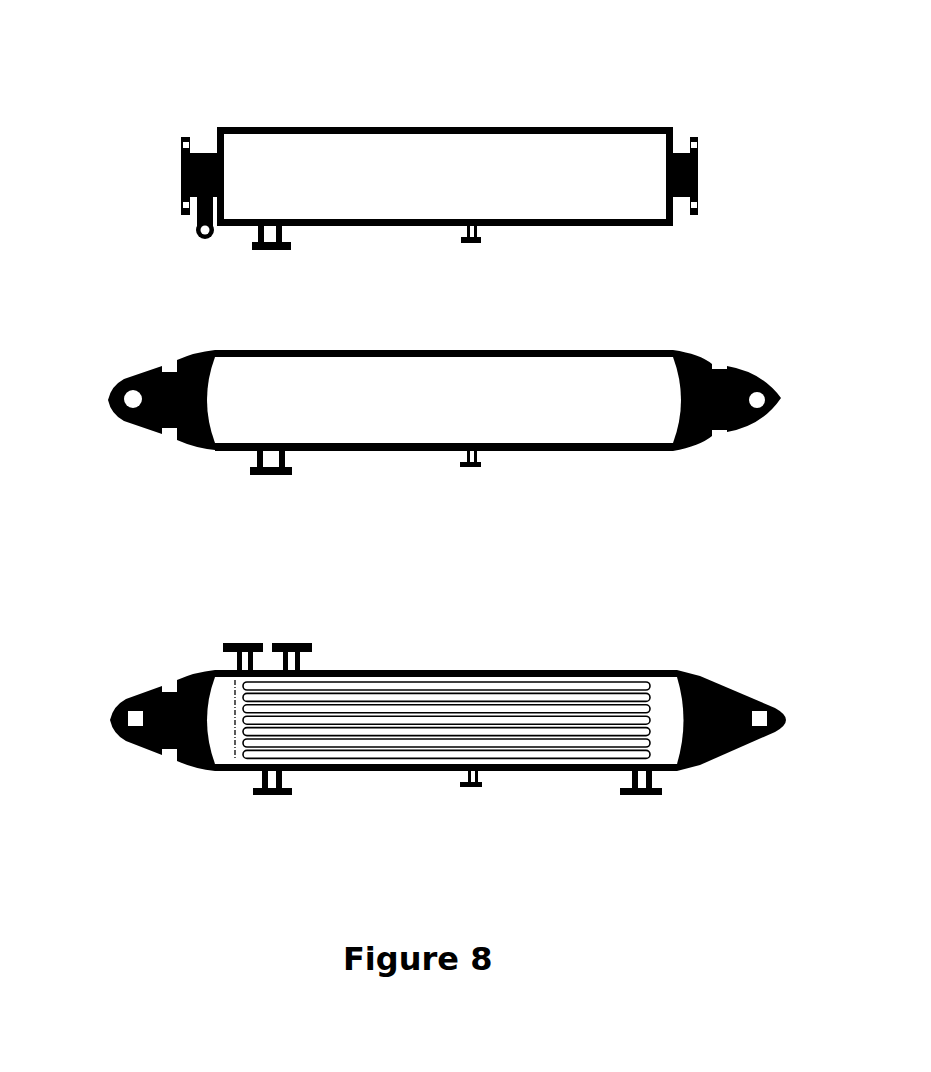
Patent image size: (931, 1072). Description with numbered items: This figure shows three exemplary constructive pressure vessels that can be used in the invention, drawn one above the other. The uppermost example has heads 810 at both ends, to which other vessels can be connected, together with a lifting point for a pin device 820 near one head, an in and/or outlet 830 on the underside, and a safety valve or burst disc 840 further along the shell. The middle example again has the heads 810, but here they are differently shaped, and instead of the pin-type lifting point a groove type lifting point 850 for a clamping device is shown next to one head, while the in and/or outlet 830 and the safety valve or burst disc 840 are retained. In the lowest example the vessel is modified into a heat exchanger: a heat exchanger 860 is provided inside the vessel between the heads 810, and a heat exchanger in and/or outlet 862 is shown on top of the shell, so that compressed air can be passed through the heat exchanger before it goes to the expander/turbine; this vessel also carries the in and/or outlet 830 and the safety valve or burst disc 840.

The heads 810 is at (181, 163).
The lifting point for a pin device 820 is at (197, 232).
The in and/or outlet 830 is at (300, 250).
The safety valve or burst disc 840 is at (483, 242).
The groove type lifting point for a clamping device 850 is at (172, 437).
The heat exchanger 860 is at (430, 698).
The heat exchanger in and/or outlet 862 is at (243, 643).